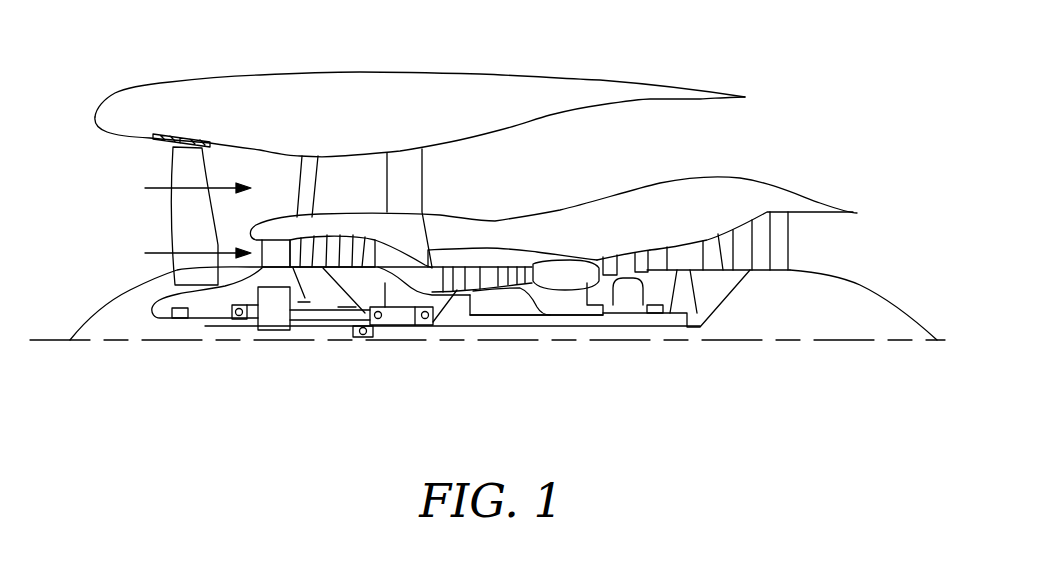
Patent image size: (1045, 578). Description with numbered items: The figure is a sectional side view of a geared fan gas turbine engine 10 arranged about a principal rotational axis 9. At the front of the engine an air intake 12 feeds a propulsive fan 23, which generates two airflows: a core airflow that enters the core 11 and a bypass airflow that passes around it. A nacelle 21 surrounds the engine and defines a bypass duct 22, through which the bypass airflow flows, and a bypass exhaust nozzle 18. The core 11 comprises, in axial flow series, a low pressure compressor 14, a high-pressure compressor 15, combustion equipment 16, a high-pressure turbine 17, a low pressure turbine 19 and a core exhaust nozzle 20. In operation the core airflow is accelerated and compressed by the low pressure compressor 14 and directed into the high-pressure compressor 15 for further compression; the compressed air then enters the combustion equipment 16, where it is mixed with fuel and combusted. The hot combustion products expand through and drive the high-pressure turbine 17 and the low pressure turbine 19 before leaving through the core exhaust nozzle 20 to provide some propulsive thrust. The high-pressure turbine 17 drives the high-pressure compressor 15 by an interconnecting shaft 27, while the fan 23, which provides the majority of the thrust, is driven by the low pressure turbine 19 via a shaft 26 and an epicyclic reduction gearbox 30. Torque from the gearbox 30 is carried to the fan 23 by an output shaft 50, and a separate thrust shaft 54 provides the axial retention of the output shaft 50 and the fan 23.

The principal rotational axis 9 is at (648, 346).
The gas turbine engine 10 is at (173, 86).
The core 11 is at (536, 240).
The air intake 12 is at (128, 164).
The low pressure compressor 14 is at (341, 247).
The high-pressure compressor 15 is at (487, 278).
The combustion equipment 16 is at (561, 280).
The high-pressure turbine 17 is at (623, 262).
The bypass exhaust nozzle 18 is at (735, 135).
The low pressure turbine 19 is at (762, 232).
The core exhaust nozzle 20 is at (821, 240).
The nacelle 21 is at (401, 86).
The bypass duct 22 is at (690, 153).
The propulsive fan 23 is at (175, 220).
The shaft 26 is at (483, 326).
The interconnecting shaft 27 is at (522, 316).
The epicyclic gearbox 30 is at (271, 320).
The output shaft 50 is at (190, 318).
The thrust shaft 54 is at (353, 337).